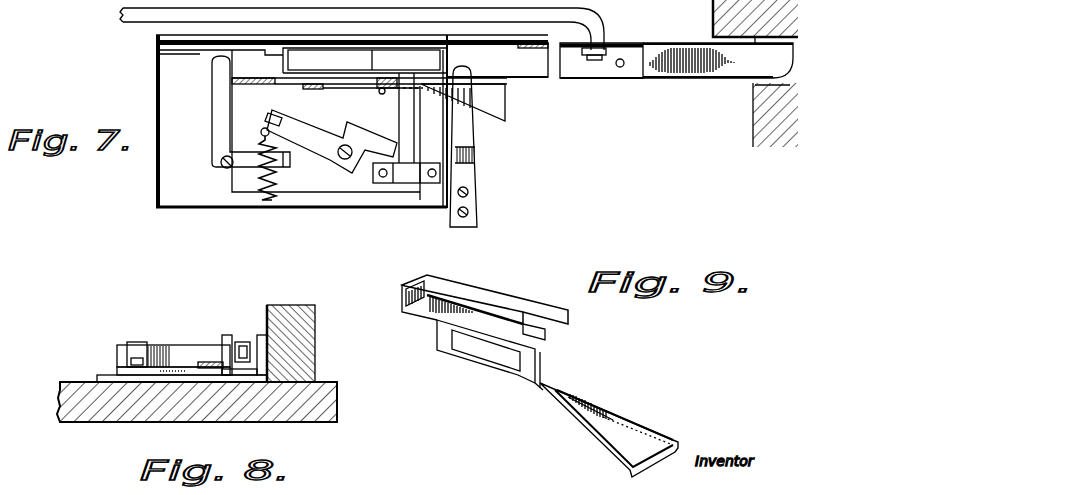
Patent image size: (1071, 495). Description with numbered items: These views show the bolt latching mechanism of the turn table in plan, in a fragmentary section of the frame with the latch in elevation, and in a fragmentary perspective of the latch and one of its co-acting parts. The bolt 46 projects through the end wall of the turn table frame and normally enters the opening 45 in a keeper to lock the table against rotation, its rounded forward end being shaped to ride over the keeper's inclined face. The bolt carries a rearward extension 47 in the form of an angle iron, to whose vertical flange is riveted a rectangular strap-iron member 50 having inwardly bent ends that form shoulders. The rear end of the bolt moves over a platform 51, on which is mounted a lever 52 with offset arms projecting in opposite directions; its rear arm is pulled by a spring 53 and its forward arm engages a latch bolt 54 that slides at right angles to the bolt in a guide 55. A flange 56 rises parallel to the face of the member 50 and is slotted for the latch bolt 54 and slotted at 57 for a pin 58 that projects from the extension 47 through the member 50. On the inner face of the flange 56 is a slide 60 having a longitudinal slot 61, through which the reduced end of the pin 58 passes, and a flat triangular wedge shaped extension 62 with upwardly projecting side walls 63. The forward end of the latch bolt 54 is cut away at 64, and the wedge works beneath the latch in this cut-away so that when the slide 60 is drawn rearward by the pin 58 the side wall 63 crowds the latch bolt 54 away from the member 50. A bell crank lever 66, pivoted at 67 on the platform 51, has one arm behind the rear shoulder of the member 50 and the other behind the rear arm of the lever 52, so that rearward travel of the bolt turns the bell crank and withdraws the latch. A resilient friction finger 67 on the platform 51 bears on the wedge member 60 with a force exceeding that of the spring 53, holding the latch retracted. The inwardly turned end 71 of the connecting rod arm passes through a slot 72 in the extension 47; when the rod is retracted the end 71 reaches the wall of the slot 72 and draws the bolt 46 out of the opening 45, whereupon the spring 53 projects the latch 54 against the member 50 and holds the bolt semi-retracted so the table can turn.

In FIG. 7, the opening 45 is at (764, 85).
In FIG. 7, the bolt 46 is at (673, 50).
In FIG. 7, the rearward extension 47 is at (528, 74).
In FIG. 7, the member 50 is at (339, 60).
In FIG. 8, the member 50 is at (256, 340).
In FIG. 7, the platform 51 is at (160, 87).
In FIG. 7, the lever 52 is at (340, 132).
In FIG. 7, the spring 53 is at (278, 184).
In FIG. 8, the latch bolt 54 is at (190, 350).
In FIG. 9, the latch bolt 54 is at (470, 292).
In FIG. 8, the guide 55 is at (143, 345).
In FIG. 7, the flange 56 is at (264, 84).
In FIG. 8, the slot 57 is at (233, 376).
In FIG. 7, the pin 58 is at (383, 55).
In FIG. 7, the slide 60 is at (322, 90).
In FIG. 8, the slide 60 is at (215, 362).
In FIG. 9, the slide 60 is at (549, 387).
In FIG. 9, the slot 61 is at (493, 353).
In FIG. 7, the wedge shaped extension 62 is at (495, 110).
In FIG. 9, the wedge shaped extension 62 is at (615, 442).
In FIG. 7, the side walls 63 is at (492, 86).
In FIG. 9, the side walls 63 is at (597, 430).
In FIG. 9, the cut-away portion 64 is at (551, 331).
In FIG. 7, the bell crank lever 66 is at (215, 104).
In FIG. 7, the friction finger 67 is at (224, 165).
In FIG. 7, the inwardly turned end 71 is at (604, 28).
In FIG. 7, the slot 72 is at (614, 52).